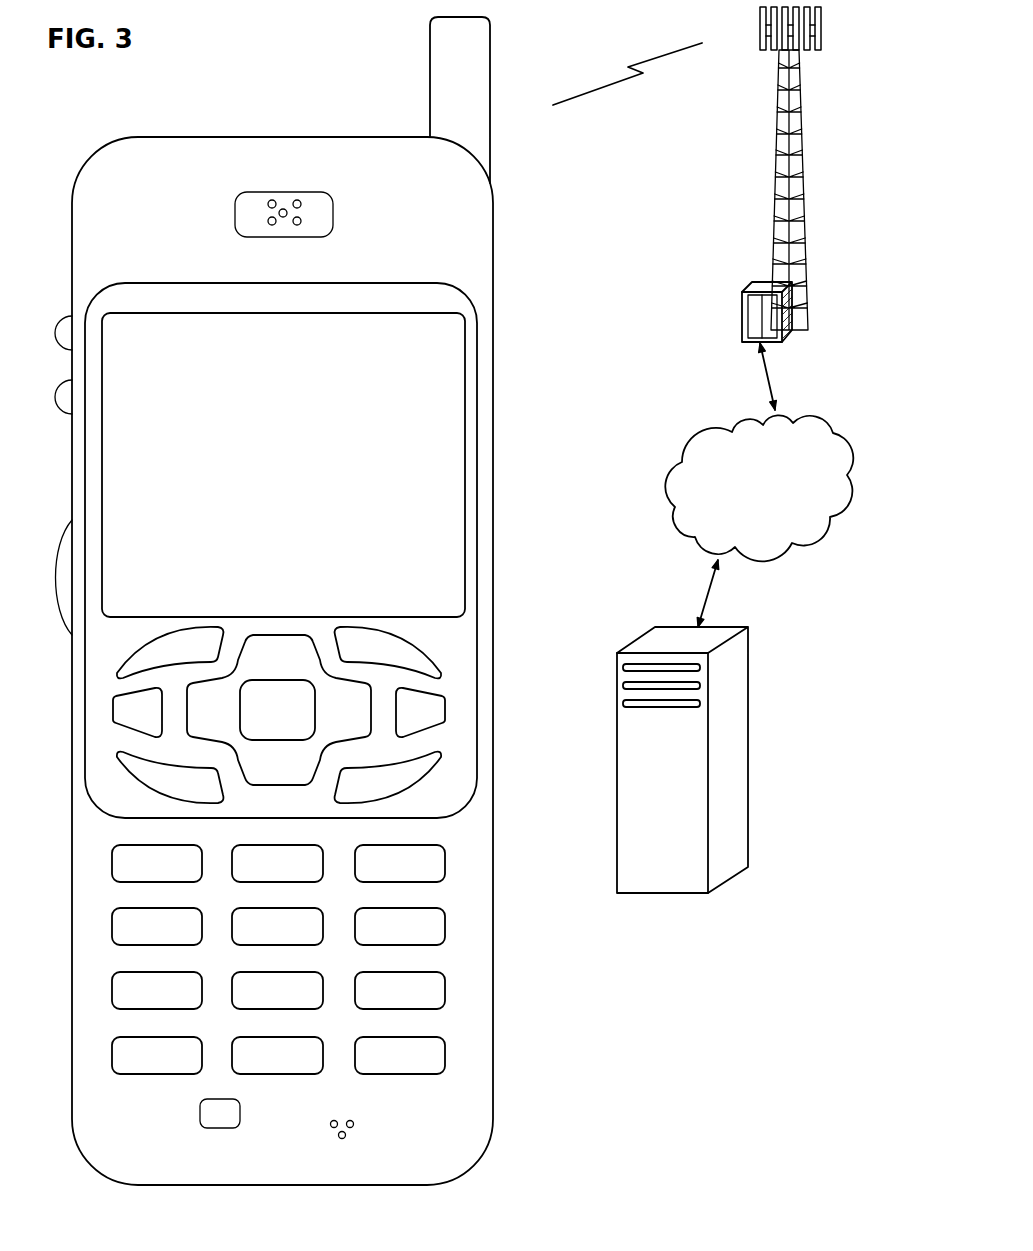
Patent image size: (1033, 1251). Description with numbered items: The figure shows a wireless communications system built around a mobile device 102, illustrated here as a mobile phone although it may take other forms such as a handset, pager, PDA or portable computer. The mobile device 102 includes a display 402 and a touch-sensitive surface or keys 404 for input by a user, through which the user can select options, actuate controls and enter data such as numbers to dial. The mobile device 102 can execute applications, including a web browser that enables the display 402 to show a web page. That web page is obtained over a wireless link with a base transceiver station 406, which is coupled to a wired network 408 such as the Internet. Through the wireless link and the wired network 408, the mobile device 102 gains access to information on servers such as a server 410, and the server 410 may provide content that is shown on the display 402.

The mobile device 102 is at (309, 615).
The display 402 is at (467, 327).
The keys 404 is at (503, 1082).
The base transceiver station 406 is at (773, 189).
The wired network 408 is at (681, 535).
The server 410 is at (666, 895).